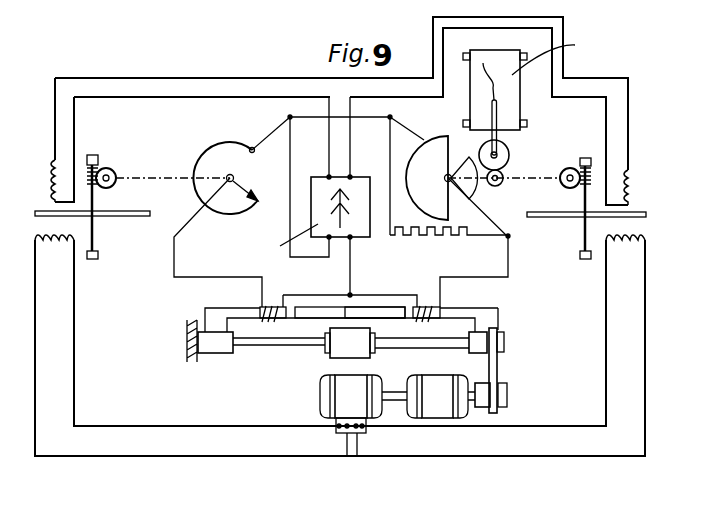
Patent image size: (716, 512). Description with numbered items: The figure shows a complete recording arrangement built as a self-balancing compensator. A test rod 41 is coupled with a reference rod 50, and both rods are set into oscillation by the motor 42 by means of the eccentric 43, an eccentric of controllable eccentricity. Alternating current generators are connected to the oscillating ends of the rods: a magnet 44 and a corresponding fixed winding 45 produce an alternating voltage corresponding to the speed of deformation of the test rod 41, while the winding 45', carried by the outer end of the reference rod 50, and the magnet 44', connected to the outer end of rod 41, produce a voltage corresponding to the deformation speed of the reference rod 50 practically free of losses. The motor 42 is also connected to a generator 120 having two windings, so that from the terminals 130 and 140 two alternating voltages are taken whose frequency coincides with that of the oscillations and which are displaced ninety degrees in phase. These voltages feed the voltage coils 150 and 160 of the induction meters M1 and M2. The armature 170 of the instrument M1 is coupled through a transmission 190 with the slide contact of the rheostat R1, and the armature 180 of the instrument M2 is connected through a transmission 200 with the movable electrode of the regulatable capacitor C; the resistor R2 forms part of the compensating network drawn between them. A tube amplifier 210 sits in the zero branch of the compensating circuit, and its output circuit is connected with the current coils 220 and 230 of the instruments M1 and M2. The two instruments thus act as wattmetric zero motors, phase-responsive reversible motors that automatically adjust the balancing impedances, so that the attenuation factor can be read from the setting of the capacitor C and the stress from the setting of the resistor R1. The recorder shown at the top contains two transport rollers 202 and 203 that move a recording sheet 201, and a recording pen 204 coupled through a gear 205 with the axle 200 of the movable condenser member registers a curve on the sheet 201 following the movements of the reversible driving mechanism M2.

The current coil 220 is at (50, 165).
The voltage coil 150 is at (50, 235).
The armature 170 is at (125, 216).
The induction meter M1 is at (136, 260).
The transmission 190 is at (145, 175).
The rheostat R1 is at (203, 155).
The tube amplifier 210 is at (358, 178).
The resistor R2 is at (469, 236).
The regulatable capacitor C is at (464, 171).
The transport roller 202 is at (465, 50).
The recording sheet 201 is at (470, 104).
The transport roller 203 is at (470, 120).
The recording pen 204 is at (512, 141).
The gear 205 is at (483, 187).
The transmission 200 is at (528, 176).
The induction meter M2 is at (580, 280).
The armature 180 is at (550, 217).
The current coil 230 is at (636, 174).
The voltage coil 160 is at (627, 243).
The fixed winding 45 is at (273, 295).
The magnet 44 is at (350, 294).
The magnet 44' is at (375, 292).
The winding 45' is at (426, 293).
The test rod 41 is at (276, 346).
The reference rod 50 is at (441, 340).
The motor 42 is at (433, 383).
The generator 120 is at (343, 388).
The eccentric 43 is at (478, 460).
The terminal 130 is at (338, 428).
The terminal 140 is at (362, 428).